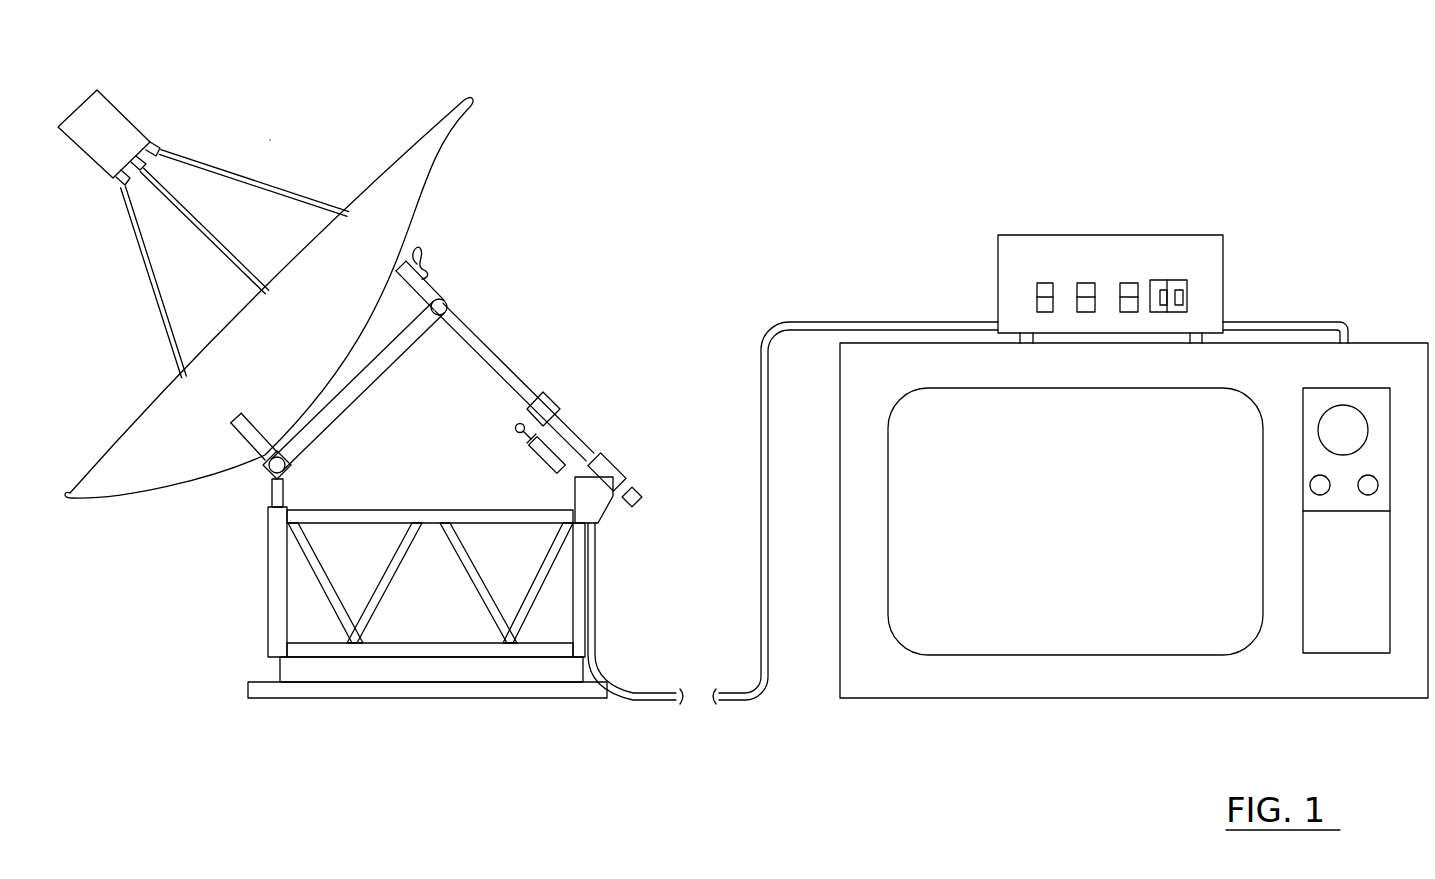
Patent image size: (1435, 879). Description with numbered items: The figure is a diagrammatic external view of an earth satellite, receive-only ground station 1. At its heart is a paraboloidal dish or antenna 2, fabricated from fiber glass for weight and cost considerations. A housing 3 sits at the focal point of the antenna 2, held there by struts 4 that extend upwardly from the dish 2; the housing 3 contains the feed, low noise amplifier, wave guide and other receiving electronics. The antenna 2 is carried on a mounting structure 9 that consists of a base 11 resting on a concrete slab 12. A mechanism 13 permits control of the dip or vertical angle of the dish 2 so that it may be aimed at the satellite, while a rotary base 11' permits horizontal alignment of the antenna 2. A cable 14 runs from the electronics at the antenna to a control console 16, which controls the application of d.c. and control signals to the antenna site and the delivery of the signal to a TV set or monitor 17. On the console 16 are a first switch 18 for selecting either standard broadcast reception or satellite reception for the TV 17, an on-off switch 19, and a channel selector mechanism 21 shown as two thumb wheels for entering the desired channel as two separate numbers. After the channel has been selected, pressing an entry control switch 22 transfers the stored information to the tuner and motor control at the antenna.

The ground station 1 is at (263, 134).
The paraboloidal dish antenna 2 is at (454, 165).
The housing 3 is at (126, 120).
The struts 4 is at (266, 188).
The mounting structure 9 is at (585, 362).
The base 11 is at (464, 567).
The rotary base 11' is at (431, 700).
The concrete slab 12 is at (400, 690).
The dip control mechanism 13 is at (462, 391).
The cable 14 is at (158, 150).
The control console 16 is at (1154, 240).
The TV set or monitor 17 is at (1081, 534).
The first switch 18 is at (1048, 283).
The on-off switch 19 is at (1090, 260).
The channel selector mechanism 21 is at (1208, 272).
The entry control switch 22 is at (1118, 256).